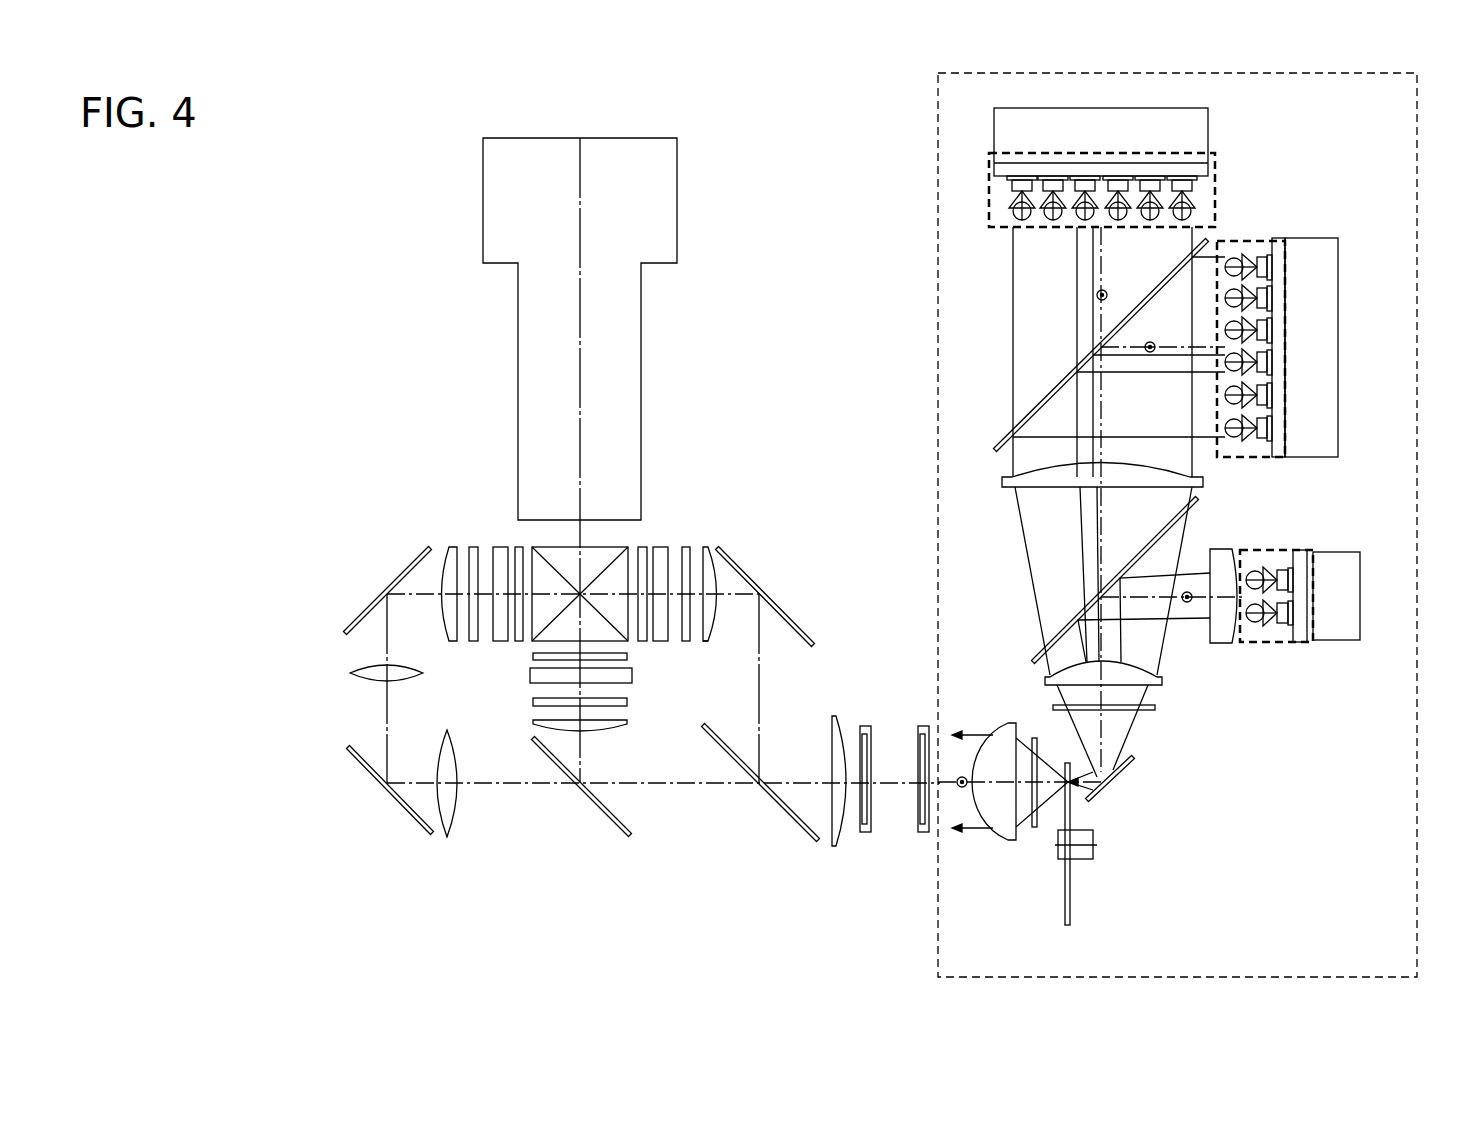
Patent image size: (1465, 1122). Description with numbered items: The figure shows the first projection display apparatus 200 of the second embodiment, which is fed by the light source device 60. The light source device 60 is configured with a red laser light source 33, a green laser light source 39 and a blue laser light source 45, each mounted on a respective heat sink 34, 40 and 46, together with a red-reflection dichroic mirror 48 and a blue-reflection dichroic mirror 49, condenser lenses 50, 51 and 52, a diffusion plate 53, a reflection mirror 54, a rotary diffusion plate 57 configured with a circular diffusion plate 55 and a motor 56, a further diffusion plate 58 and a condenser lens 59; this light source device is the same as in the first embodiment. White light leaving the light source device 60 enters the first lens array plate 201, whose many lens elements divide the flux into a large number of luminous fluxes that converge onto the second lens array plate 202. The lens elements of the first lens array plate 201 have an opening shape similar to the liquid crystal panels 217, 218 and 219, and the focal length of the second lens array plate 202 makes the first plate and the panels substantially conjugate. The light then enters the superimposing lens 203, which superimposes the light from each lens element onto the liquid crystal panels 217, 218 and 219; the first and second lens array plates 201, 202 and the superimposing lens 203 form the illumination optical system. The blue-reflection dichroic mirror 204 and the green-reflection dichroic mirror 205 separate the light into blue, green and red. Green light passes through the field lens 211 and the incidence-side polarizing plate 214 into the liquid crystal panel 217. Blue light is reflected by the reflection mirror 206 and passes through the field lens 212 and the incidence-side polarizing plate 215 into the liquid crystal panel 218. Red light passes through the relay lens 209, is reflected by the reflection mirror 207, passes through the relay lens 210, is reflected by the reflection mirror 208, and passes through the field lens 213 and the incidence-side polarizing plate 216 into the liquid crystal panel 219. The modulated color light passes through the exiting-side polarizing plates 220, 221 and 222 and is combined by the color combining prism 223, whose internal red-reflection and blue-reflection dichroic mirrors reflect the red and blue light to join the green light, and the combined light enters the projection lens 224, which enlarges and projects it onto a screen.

The first projection display apparatus 200 is at (416, 147).
The first lens array plate 201 is at (917, 832).
The second lens array plate 202 is at (862, 834).
The superimposing lens 203 is at (828, 842).
The blue-reflection dichroic mirror 204 is at (783, 808).
The green-reflection dichroic mirror 205 is at (607, 815).
The reflection mirror 206 is at (745, 573).
The reflection mirror 207 is at (350, 757).
The reflection mirror 208 is at (355, 618).
The relay lens 209 is at (453, 830).
The relay lens 210 is at (352, 672).
The field lens 211 is at (627, 725).
The field lens 212 is at (713, 635).
The field lens 213 is at (447, 547).
The incidence-side polarizing plate 214 is at (627, 702).
The incidence-side polarizing plate 215 is at (687, 543).
The incidence-side polarizing plate 216 is at (467, 545).
The liquid crystal panel 217 is at (530, 678).
The liquid crystal panel 218 is at (662, 543).
The liquid crystal panel 219 is at (498, 543).
The exiting-side polarizing plate 220 is at (530, 656).
The exiting-side polarizing plate 221 is at (642, 642).
The exiting-side polarizing plate 222 is at (518, 545).
The color combining prism 223 is at (620, 545).
The projection lens 224 is at (518, 310).
The red laser light source 33 is at (1238, 241).
The heat sink 34 is at (1322, 243).
The green laser light source 39 is at (990, 185).
The heat sink 40 is at (1203, 128).
The blue laser light source 45 is at (1250, 550).
The heat sink 46 is at (1347, 568).
The red-reflection dichroic mirror 48 is at (995, 443).
The blue-reflection dichroic mirror 49 is at (1040, 648).
The condenser lens 50 is at (1002, 487).
The condenser lens 51 is at (1220, 635).
The condenser lens 52 is at (1045, 680).
The diffusion plate 53 is at (1153, 708).
The reflection mirror 54 is at (1127, 768).
The circular diffusion plate 55 is at (1068, 890).
The motor 56 is at (1095, 852).
The rotary diffusion plate 57 is at (1180, 853).
The diffusion plate 58 is at (1033, 828).
The condenser lens 59 is at (1002, 838).
The light source device 60 is at (1417, 337).